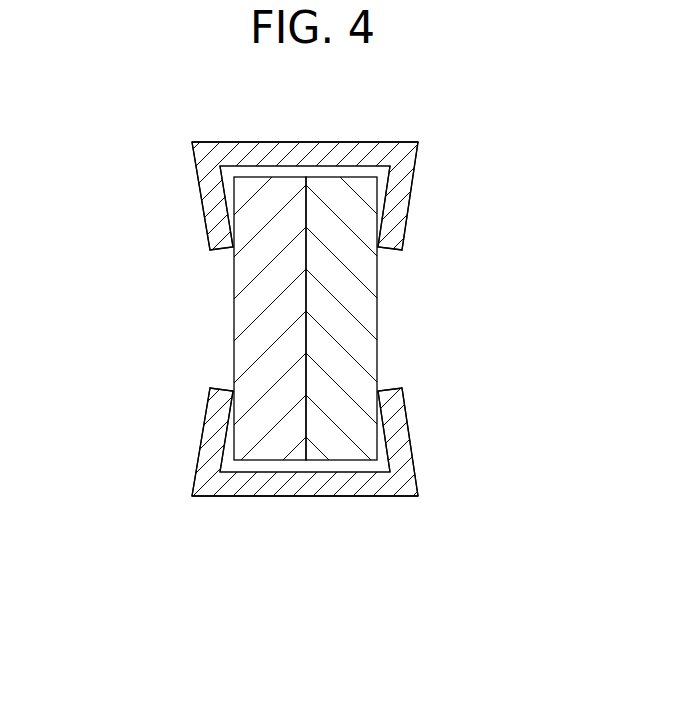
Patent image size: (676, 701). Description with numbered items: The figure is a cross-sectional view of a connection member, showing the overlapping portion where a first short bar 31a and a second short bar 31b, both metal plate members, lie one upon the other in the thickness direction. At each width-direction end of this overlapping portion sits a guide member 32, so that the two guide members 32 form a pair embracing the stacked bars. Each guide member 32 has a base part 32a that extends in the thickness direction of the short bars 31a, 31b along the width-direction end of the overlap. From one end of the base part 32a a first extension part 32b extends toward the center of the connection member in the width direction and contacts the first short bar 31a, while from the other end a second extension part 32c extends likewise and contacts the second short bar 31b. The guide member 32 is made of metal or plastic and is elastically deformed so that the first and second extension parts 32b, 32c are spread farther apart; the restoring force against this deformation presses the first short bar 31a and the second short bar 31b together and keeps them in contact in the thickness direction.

The guide member 32 is at (416, 159).
The base part 32a is at (308, 141).
The first extension part 32b is at (215, 203).
The second extension part 32c is at (403, 208).
The first short bar 31a is at (233, 315).
The second short bar 31b is at (377, 322).